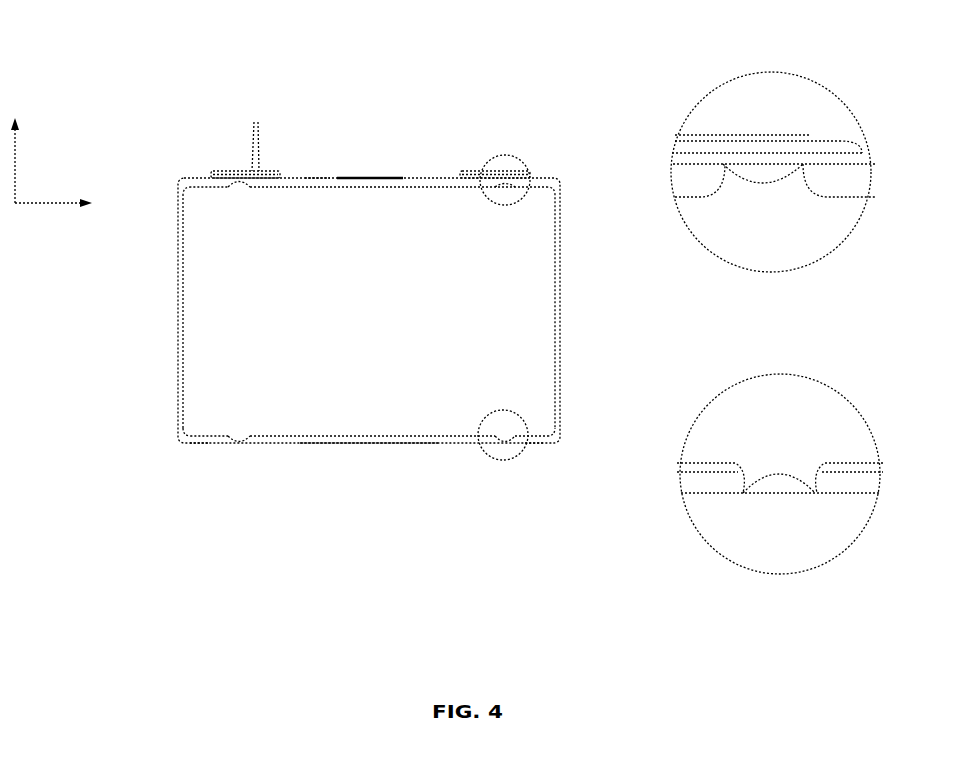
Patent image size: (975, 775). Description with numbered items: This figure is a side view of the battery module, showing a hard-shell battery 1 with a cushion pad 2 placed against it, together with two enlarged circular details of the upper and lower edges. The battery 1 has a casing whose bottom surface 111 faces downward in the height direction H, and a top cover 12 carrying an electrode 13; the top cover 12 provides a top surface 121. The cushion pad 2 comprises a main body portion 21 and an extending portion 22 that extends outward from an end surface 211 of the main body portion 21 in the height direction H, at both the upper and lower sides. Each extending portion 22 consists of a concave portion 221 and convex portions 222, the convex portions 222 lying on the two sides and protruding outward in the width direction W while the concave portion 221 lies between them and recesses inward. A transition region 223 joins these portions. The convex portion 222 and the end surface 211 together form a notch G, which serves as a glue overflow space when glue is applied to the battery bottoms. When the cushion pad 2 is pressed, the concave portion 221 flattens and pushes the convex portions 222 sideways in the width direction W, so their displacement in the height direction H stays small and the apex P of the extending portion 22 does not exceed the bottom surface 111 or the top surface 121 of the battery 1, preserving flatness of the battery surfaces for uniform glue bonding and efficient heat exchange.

The battery 1 is at (557, 171).
The cushion pad 2 is at (181, 224).
The top cover 12 is at (838, 128).
The electrode 13 is at (265, 171).
The main body portion 21 is at (200, 258).
The extending portion 22 is at (140, 48).
The bottom surface 111 is at (378, 443).
The top surface 121 is at (418, 177).
The end surface 211 is at (316, 443).
The concave portion 221 is at (247, 172).
The convex portion 222 is at (222, 171).
The connection 223 is at (261, 136).
The notch G is at (316, 176).
The apex P is at (763, 183).
The height direction H is at (30, 157).
The width direction W is at (58, 220).